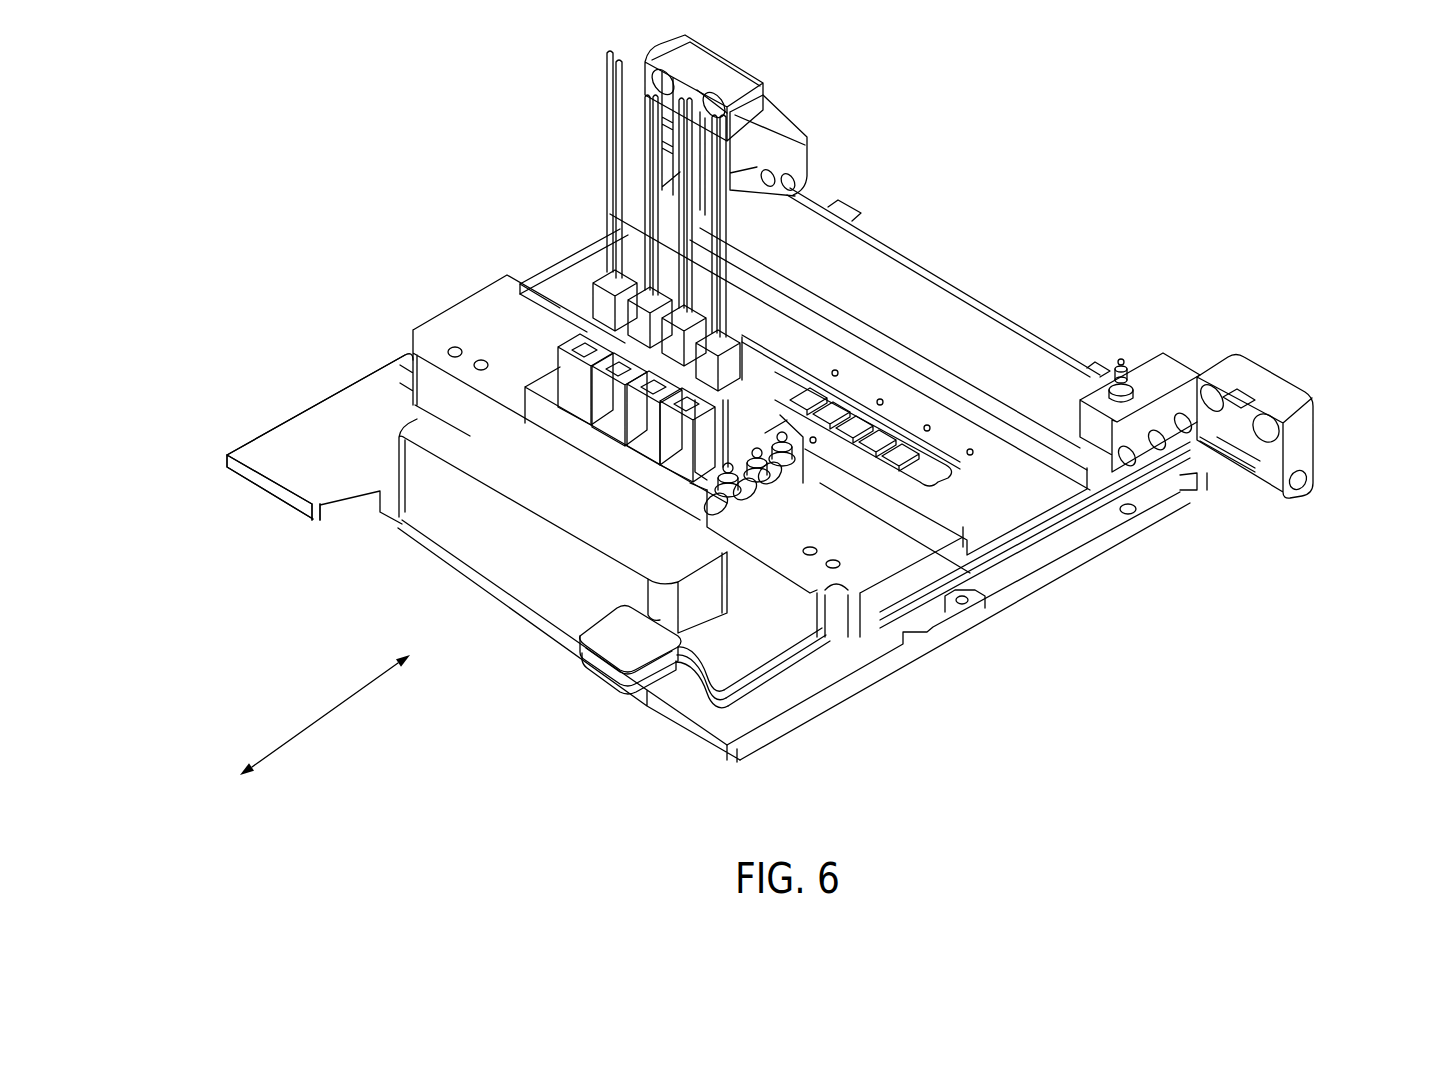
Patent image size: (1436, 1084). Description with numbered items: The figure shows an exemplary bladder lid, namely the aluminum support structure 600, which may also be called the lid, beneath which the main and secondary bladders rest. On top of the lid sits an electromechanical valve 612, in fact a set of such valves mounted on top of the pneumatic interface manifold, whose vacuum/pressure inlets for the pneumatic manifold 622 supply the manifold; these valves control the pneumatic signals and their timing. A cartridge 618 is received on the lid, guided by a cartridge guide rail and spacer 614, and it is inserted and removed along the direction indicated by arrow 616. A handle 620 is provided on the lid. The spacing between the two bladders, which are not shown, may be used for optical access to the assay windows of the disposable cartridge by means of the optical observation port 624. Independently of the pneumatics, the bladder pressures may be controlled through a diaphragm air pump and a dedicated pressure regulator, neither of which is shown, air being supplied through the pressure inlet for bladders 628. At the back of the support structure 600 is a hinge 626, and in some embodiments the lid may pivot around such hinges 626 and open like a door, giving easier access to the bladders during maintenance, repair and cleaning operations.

The aluminum support structure 600 is at (934, 300).
The electromechanical valve 612 is at (540, 357).
The cartridge guide rail and spacer 614 is at (314, 427).
The arrow 616 is at (298, 735).
The cartridge 618 is at (527, 567).
The handle 620 is at (749, 632).
The vacuum/pressure inlets for the pneumatic manifold 622 is at (814, 488).
The optical observation port 624 is at (960, 452).
The hinge 626 is at (1280, 381).
The pressure inlet for bladders 628 is at (1122, 338).